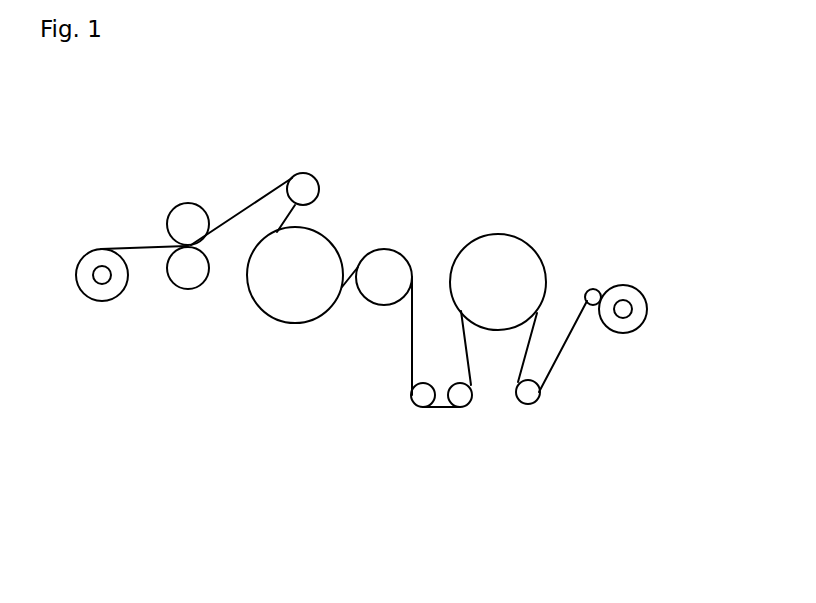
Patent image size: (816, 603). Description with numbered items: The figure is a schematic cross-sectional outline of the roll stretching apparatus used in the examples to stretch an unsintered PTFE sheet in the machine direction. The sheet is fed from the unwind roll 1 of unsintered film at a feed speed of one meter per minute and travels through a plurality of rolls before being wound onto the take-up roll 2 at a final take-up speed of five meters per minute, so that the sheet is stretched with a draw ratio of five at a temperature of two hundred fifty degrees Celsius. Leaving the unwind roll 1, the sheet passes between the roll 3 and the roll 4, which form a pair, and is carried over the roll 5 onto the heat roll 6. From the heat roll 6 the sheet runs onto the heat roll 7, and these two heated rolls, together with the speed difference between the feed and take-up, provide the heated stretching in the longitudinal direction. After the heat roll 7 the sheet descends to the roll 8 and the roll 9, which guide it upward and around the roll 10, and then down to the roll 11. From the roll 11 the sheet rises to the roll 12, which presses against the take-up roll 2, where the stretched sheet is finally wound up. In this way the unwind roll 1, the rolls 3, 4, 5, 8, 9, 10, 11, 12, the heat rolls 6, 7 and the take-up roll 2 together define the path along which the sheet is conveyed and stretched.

The unwind roll of unsintered film 1 is at (115, 299).
The take-up roll 2 is at (643, 292).
The roll 3 is at (197, 290).
The roll 4 is at (172, 208).
The roll 5 is at (315, 178).
The heat roll 6 is at (295, 324).
The heat roll 7 is at (399, 252).
The roll 8 is at (414, 404).
The roll 9 is at (468, 405).
The roll 10 is at (514, 237).
The roll 11 is at (537, 401).
The roll 12 is at (592, 289).